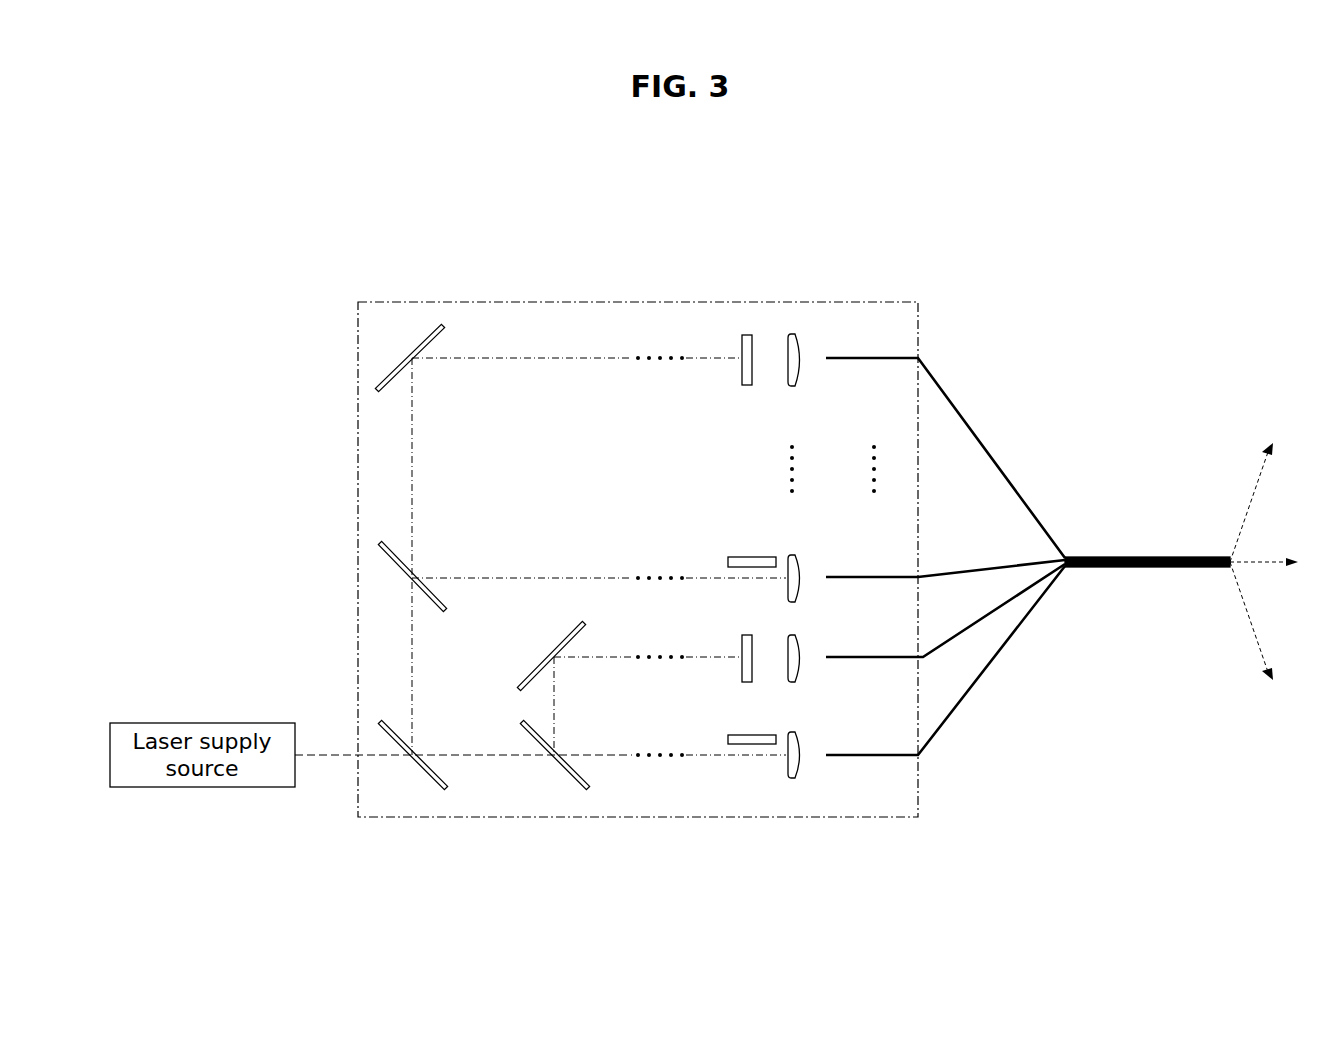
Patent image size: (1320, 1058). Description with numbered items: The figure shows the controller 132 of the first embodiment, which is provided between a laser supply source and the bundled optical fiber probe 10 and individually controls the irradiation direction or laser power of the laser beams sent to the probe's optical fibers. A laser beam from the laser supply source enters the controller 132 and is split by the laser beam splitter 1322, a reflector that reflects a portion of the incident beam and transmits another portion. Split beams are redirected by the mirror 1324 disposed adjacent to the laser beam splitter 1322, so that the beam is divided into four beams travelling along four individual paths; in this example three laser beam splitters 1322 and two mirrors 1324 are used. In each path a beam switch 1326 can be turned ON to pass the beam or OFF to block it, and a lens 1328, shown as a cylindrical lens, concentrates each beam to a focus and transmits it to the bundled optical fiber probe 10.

The bundled optical fiber probe 10 is at (1147, 557).
The controller 132 is at (637, 302).
The laser beam splitter 1322 is at (422, 766).
The mirror 1324 is at (550, 657).
The beam switch 1326 is at (750, 746).
The lens 1328 is at (796, 779).